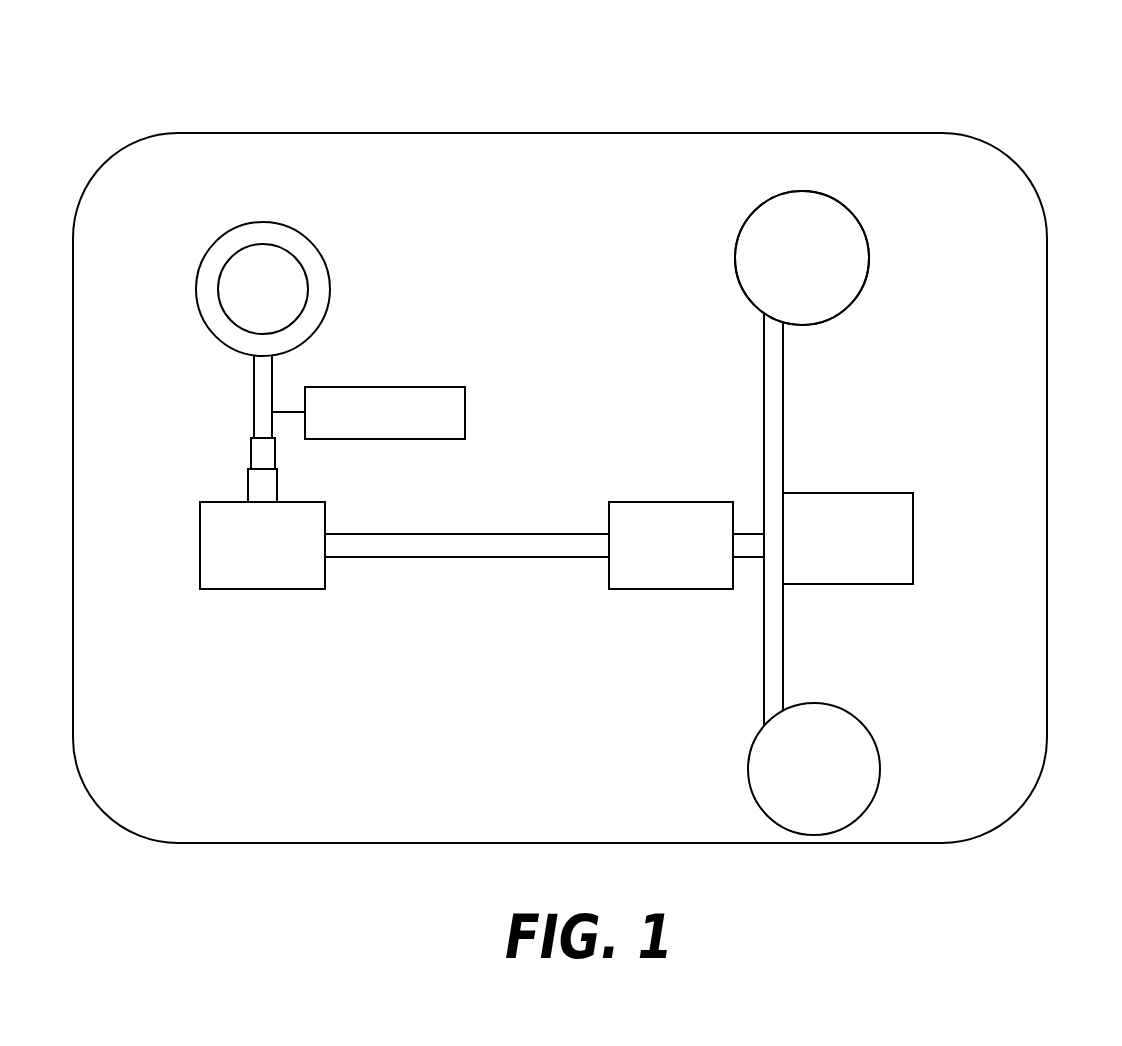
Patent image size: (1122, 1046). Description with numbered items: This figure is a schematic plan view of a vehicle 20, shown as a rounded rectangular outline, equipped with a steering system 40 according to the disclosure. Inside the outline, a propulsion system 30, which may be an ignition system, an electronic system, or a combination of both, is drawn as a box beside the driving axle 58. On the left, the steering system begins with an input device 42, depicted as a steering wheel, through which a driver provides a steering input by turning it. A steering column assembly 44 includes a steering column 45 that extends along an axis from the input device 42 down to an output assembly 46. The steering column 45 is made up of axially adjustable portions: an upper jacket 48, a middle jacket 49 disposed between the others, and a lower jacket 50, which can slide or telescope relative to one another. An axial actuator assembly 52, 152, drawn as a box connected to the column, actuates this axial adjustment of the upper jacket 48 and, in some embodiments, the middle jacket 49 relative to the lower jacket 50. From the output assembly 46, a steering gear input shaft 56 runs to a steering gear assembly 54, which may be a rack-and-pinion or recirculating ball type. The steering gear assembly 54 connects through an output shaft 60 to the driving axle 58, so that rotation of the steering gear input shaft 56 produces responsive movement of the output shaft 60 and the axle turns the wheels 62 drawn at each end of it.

The vehicle 20 is at (1030, 131).
The propulsion system 30 is at (848, 538).
The steering system 40 is at (898, 257).
The input device 42 is at (213, 252).
The steering column assembly 44 is at (385, 413).
The steering column 45 is at (228, 412).
The output assembly 46 is at (262, 545).
The upper jacket 48 is at (260, 370).
The middle jacket 49 is at (263, 450).
The lower jacket 50 is at (258, 487).
The axial actuator assembly 52 is at (378, 371).
The controller 152 is at (385, 413).
The steering gear assembly 54 is at (671, 545).
The steering gear input shaft 56 is at (557, 547).
The driving axle 58 is at (773, 607).
The output shaft 60 is at (747, 545).
The wheels 62 is at (862, 287).